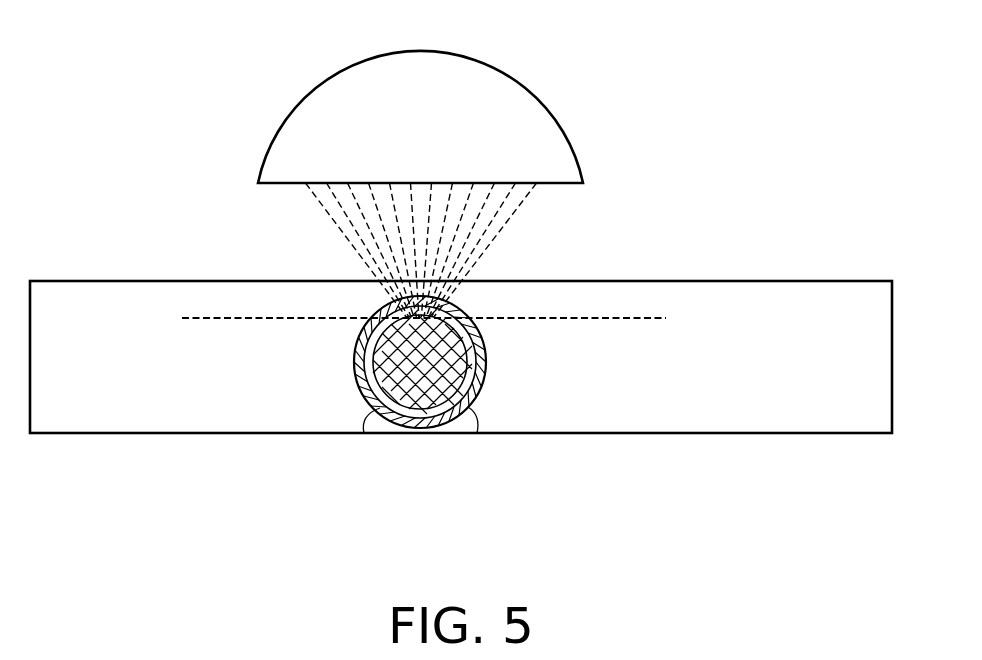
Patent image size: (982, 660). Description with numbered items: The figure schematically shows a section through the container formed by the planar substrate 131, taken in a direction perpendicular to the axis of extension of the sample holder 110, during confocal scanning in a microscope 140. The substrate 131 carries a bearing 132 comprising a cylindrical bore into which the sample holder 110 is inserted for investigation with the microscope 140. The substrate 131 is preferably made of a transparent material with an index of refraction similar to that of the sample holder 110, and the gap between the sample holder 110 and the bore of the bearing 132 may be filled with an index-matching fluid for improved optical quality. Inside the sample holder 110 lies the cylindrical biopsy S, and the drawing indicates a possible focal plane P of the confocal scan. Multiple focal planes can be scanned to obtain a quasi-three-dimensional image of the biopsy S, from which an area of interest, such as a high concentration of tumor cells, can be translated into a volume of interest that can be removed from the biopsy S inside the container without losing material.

The microscope 140 is at (288, 83).
The planar substrate 131 is at (861, 344).
The sample holder 110 is at (380, 408).
The bearing 132 is at (477, 433).
The focal plane P is at (608, 318).
The cylindrical biopsy S is at (452, 378).